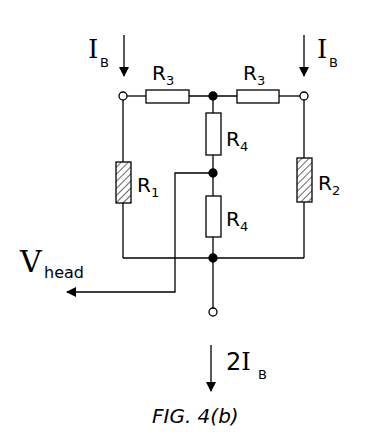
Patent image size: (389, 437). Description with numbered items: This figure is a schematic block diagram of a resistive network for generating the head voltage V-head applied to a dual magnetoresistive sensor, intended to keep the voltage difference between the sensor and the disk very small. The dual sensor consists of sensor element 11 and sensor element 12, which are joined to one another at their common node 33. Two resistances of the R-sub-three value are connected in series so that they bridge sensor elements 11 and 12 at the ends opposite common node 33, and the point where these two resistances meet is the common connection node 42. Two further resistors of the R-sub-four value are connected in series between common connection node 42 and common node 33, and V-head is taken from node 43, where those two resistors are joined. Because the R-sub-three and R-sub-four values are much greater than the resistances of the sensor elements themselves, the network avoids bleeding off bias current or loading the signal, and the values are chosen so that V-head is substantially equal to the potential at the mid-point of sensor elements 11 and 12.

The sensor element 11 is at (110, 174).
The sensor element 12 is at (287, 177).
The common connection node 42 is at (213, 80).
The node 43 is at (229, 176).
The common node 33 is at (230, 271).